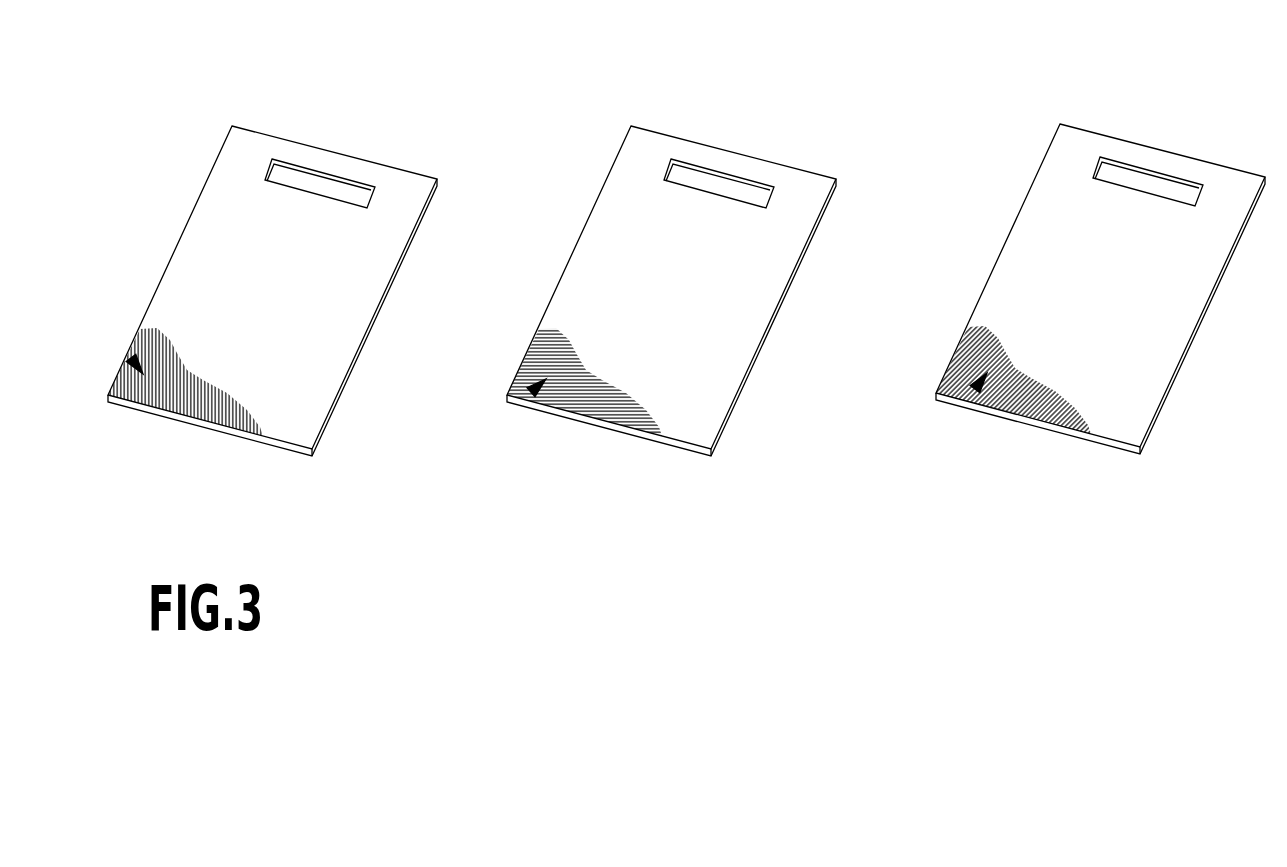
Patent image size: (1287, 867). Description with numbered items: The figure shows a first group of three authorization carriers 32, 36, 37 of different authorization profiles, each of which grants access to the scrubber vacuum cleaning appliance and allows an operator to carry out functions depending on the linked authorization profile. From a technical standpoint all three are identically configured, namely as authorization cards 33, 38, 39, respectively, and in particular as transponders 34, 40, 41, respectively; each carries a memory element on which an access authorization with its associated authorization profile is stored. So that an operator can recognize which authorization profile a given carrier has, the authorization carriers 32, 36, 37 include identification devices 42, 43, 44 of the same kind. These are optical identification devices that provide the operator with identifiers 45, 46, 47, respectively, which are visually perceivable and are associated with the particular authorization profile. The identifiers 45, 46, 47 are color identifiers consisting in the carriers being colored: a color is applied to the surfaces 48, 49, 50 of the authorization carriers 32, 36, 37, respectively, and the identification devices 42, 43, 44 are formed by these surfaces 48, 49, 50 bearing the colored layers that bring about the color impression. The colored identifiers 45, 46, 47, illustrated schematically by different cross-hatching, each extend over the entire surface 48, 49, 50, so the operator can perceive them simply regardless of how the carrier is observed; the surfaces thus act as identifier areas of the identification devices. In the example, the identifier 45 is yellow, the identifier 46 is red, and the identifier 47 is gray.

The authorization carrier 32 is at (655, 259).
The authorization card 33 is at (671, 252).
The transponder 34 is at (714, 133).
The authorization carrier 36 is at (259, 254).
The authorization carrier 37 is at (1097, 263).
The authorization card 38 is at (232, 155).
The authorization card 39 is at (1100, 248).
The transponder 40 is at (257, 158).
The transponder 41 is at (1141, 131).
The identification device 42 is at (510, 431).
The identification device 43 is at (131, 358).
The identification device 44 is at (958, 430).
The identifier 45 is at (584, 410).
The identifier 46 is at (168, 388).
The identifier 47 is at (1013, 414).
The surface 48 is at (671, 317).
The surface 49 is at (332, 337).
The surface 50 is at (1100, 315).